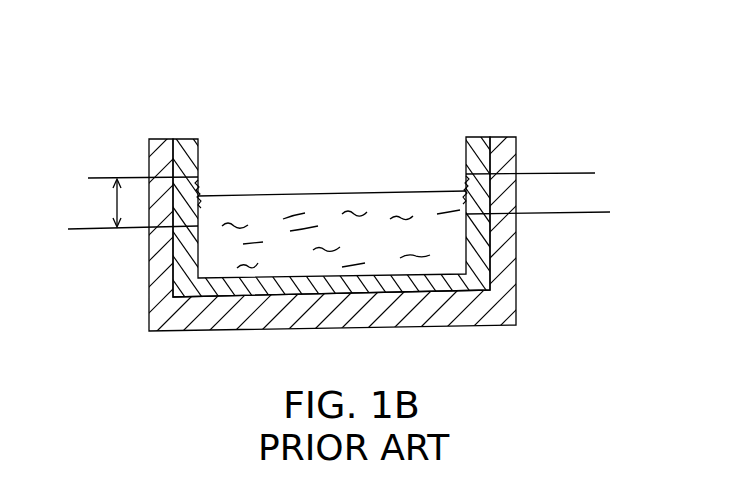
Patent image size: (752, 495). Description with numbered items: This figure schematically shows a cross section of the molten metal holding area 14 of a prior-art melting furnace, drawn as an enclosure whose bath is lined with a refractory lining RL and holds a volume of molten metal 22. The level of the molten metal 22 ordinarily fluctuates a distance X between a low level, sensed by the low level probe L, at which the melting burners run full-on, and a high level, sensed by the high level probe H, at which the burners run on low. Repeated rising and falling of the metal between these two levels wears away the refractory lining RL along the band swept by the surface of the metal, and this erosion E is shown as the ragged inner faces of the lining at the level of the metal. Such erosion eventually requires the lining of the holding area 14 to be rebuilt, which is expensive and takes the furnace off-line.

The molten metal holding area 14 is at (540, 293).
The refractory lining RL is at (198, 146).
The molten metal 22 is at (297, 210).
The erosion E is at (204, 188).
The high level probe H is at (334, 180).
The low level probe L is at (331, 223).
The distance X is at (109, 203).